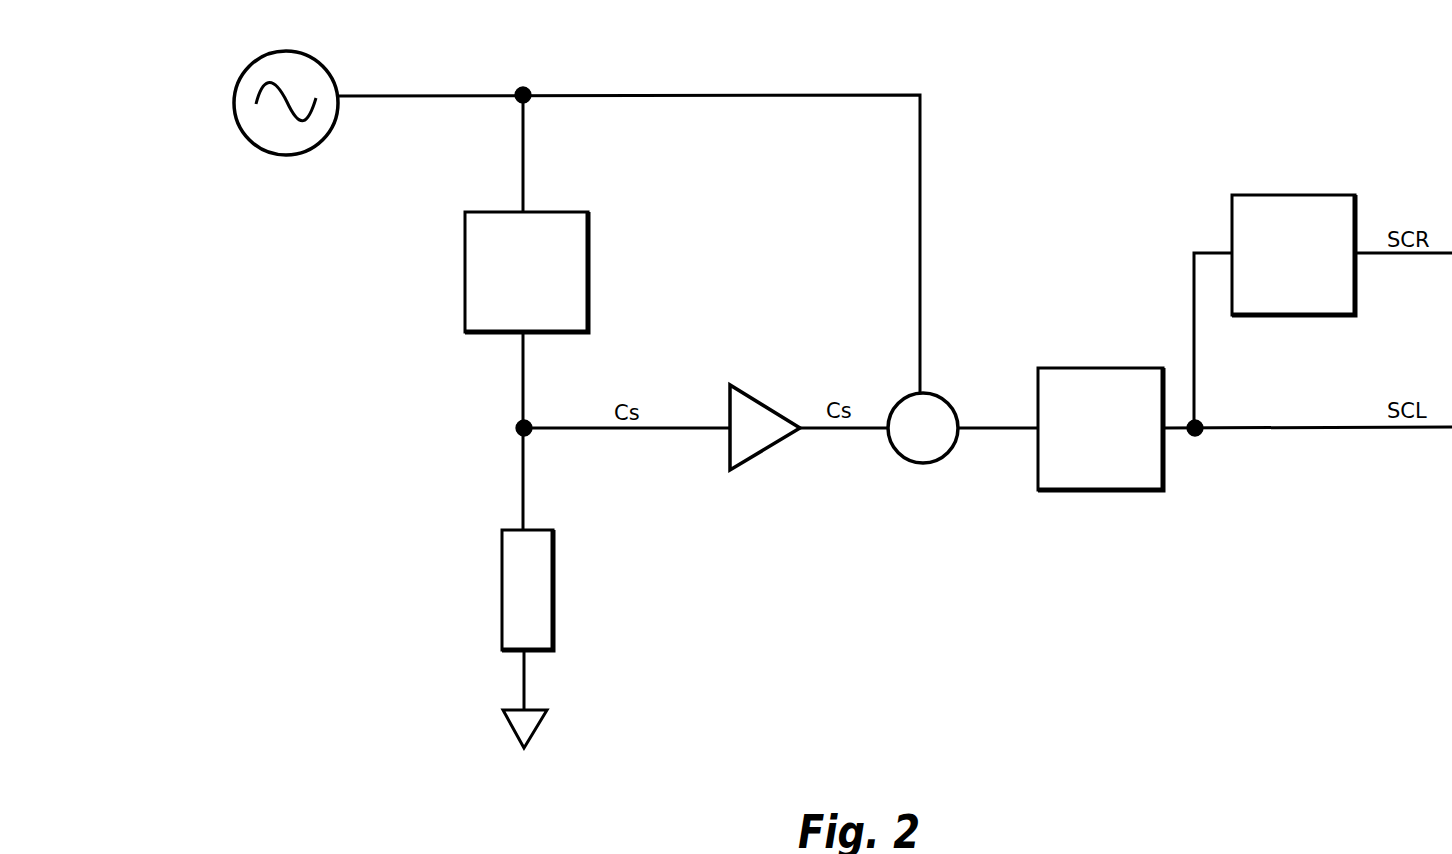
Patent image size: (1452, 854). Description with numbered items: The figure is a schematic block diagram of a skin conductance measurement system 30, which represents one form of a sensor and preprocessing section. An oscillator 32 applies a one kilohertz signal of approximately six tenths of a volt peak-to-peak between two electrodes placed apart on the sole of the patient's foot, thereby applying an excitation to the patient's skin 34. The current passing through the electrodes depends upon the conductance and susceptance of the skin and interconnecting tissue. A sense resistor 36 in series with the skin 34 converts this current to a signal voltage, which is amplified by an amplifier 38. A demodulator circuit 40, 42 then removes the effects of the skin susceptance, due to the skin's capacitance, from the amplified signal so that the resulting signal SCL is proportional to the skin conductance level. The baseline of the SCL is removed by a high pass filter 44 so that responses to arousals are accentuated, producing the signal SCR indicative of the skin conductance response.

The skin conductance measurement system 30 is at (1068, 650).
The oscillator 32 is at (234, 99).
The skin 34 is at (465, 265).
The sense resistor 36 is at (502, 553).
The amplifier 38 is at (757, 385).
The demodulator circuit 40 is at (898, 457).
The demodulator circuit 42 is at (1080, 368).
The high pass filter 44 is at (1263, 195).